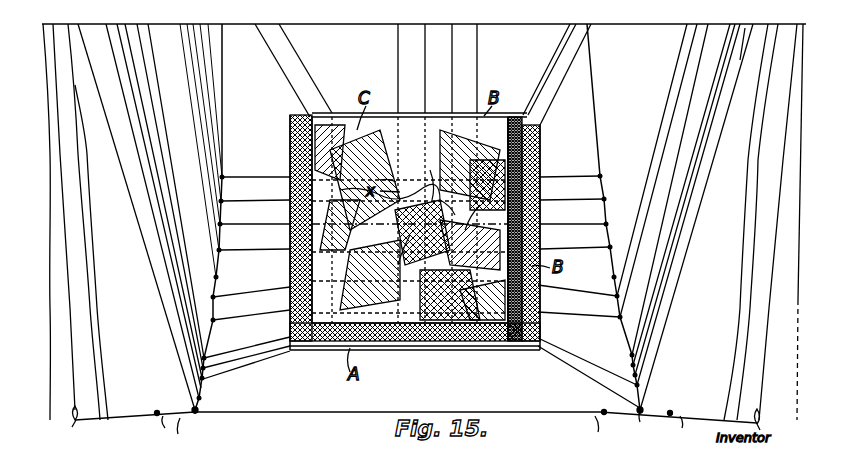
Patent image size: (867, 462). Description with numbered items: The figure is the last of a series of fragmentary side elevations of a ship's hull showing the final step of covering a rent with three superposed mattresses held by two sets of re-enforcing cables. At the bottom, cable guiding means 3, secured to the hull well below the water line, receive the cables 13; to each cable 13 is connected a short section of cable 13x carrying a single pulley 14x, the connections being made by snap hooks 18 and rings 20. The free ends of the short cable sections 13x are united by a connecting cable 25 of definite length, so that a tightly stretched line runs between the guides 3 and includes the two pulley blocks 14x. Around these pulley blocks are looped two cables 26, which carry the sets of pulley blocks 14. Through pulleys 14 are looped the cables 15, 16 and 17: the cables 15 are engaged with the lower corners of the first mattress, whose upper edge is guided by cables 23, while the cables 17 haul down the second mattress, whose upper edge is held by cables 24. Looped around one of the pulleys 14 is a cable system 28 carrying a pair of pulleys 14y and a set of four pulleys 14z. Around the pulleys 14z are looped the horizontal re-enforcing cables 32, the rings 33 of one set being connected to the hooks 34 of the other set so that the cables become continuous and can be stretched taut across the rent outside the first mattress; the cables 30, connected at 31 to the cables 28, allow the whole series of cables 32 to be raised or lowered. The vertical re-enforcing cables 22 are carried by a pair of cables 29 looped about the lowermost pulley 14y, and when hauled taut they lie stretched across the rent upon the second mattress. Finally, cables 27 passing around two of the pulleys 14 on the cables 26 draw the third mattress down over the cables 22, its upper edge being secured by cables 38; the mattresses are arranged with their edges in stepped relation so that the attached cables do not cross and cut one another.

The cable guiding means 3 is at (775, 409).
The cable 13 is at (55, 24).
The short section of cable 13x is at (632, 418).
The pulley block 14 is at (202, 386).
The pulley 14x is at (195, 416).
The pulley 14y is at (214, 319).
The pulley 14z is at (226, 176).
The cable 15 is at (106, 50).
The cable 16 is at (238, 232).
The cable 17 is at (250, 303).
The snap hook 18 is at (429, 419).
The ring 20 is at (157, 411).
The re-enforcing cable 22 is at (438, 30).
The cable 23 is at (272, 89).
The cable 24 is at (318, 80).
The connecting cable 25 is at (416, 402).
The cable 26 is at (85, 14).
The cable 27 is at (116, 24).
The cable system 28 is at (745, 28).
The cable 29 is at (163, 14).
The cable 30 is at (225, 24).
The connection 31 is at (219, 277).
The re-enforcing cable 32 is at (196, 24).
The ring 33 is at (350, 180).
The hook 34 is at (384, 172).
The cable 38 is at (548, 56).